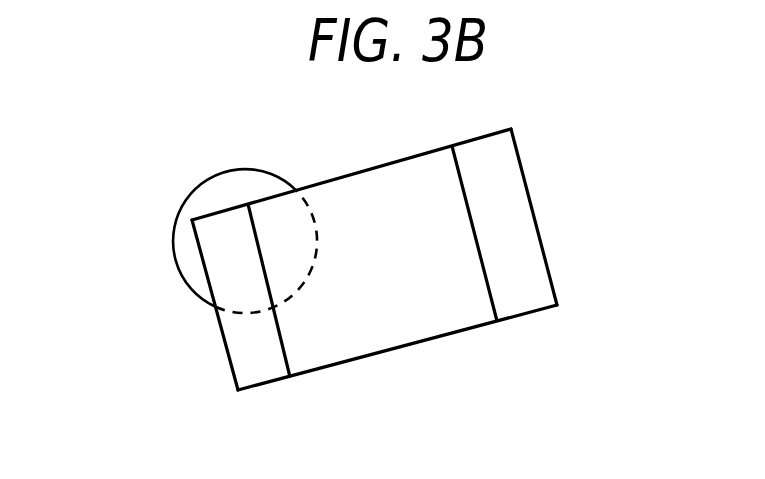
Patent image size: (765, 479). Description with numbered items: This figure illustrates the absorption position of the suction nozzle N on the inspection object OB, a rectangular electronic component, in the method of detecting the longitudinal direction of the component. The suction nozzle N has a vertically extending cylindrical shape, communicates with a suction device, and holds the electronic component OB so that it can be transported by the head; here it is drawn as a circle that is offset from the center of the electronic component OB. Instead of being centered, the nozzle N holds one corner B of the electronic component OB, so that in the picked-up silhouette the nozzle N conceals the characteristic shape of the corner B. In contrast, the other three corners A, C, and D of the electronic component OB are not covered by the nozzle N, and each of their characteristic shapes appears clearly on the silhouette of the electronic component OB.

The corner A is at (511, 129).
The corner B is at (192, 220).
The corner C is at (238, 390).
The corner D is at (557, 305).
The suction nozzle N is at (177, 268).
The inspection object OB is at (388, 351).